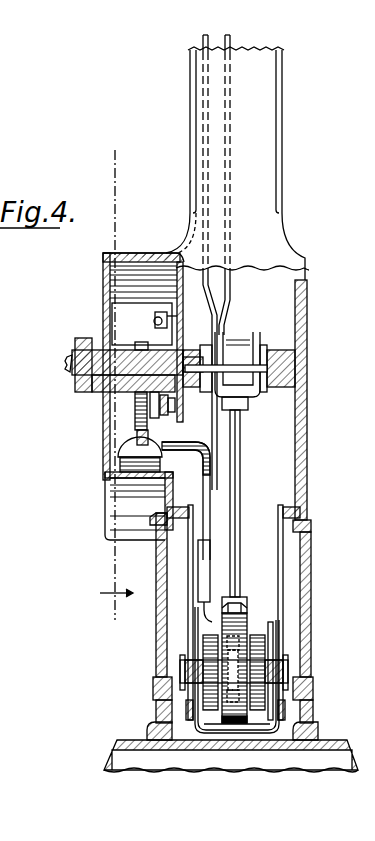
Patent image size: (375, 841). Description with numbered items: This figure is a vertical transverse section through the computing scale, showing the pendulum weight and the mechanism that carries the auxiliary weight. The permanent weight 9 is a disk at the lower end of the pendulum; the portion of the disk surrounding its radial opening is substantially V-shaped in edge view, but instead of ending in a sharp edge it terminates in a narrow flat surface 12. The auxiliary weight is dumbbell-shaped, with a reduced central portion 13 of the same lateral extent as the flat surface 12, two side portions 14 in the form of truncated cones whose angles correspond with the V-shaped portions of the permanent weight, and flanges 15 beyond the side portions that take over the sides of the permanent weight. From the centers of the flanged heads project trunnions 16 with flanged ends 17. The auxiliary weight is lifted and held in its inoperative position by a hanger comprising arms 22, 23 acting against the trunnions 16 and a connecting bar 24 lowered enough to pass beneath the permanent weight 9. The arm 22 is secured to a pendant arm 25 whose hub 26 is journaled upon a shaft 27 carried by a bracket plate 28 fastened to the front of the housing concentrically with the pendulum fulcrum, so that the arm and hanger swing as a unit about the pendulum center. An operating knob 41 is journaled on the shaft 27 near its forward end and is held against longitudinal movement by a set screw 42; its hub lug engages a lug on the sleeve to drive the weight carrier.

The permanent weight 9 is at (235, 690).
The narrow flat surface 12 is at (236, 640).
The reduced central portion 13 is at (238, 692).
The side portions 14 is at (244, 622).
The flanges 15 is at (262, 700).
The trunnions 16 is at (288, 668).
The flanged ends 17 is at (285, 680).
The arm 22 is at (200, 636).
The arm 23 is at (270, 630).
The connecting bar 24 is at (212, 727).
The pendant arm 25 is at (186, 448).
The hub 26 is at (150, 344).
The shaft 27 is at (105, 378).
The bracket plate 28 is at (168, 318).
The operating knob 41 is at (84, 340).
The set screw 42 is at (67, 363).